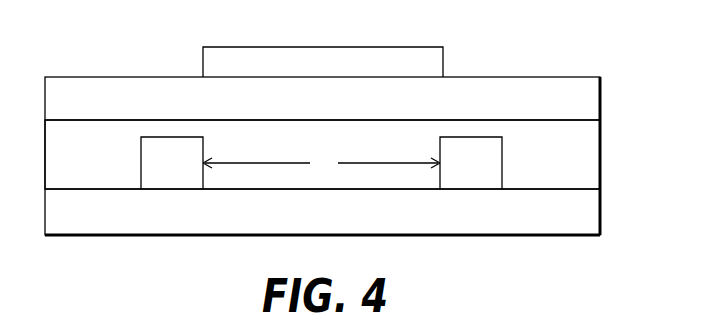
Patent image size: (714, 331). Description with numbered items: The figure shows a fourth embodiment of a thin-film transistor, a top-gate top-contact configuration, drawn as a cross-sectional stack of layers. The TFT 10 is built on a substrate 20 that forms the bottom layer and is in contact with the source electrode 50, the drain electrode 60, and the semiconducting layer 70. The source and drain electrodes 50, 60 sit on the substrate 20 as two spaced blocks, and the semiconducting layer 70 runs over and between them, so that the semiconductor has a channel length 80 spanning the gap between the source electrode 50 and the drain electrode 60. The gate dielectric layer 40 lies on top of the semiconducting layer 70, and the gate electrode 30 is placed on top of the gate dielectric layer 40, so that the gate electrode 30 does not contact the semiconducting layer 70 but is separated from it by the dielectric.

The TFT 10 is at (95, 62).
The substrate 20 is at (334, 221).
The gate electrode 30 is at (334, 73).
The gate dielectric layer 40 is at (334, 111).
The source electrode 50 is at (141, 170).
The drain electrode 60 is at (502, 167).
The semiconducting layer 70 is at (82, 173).
The channel length 80 is at (321, 163).